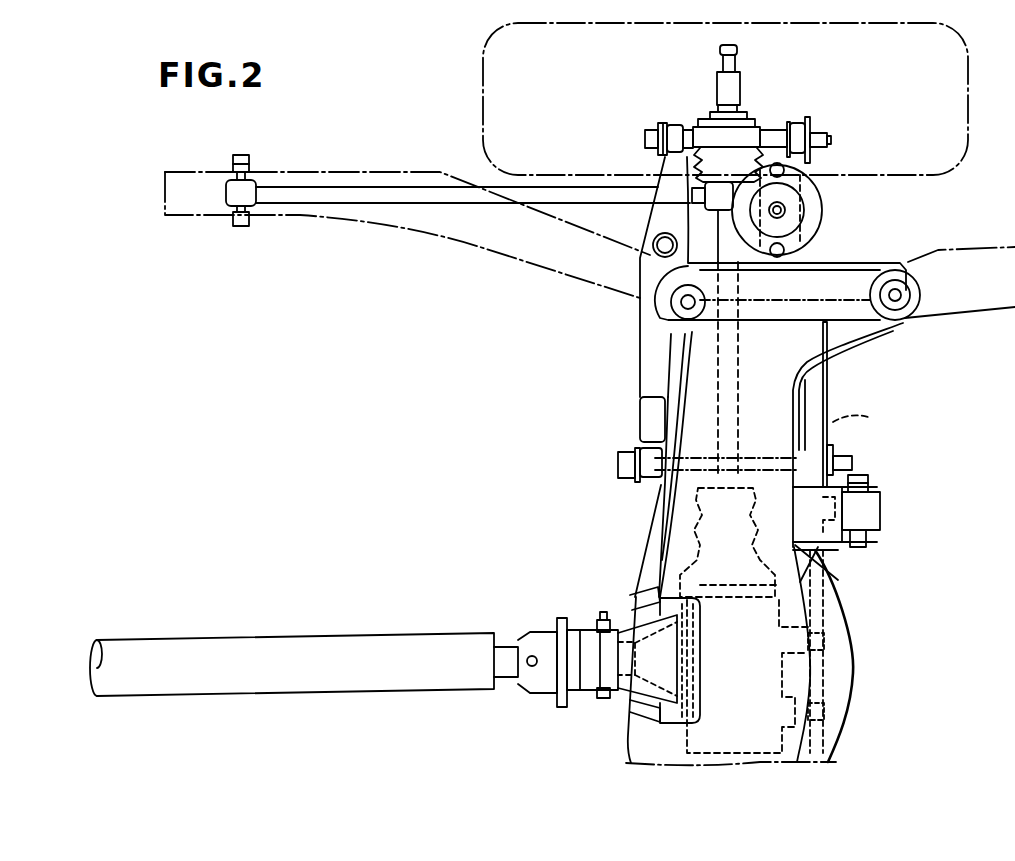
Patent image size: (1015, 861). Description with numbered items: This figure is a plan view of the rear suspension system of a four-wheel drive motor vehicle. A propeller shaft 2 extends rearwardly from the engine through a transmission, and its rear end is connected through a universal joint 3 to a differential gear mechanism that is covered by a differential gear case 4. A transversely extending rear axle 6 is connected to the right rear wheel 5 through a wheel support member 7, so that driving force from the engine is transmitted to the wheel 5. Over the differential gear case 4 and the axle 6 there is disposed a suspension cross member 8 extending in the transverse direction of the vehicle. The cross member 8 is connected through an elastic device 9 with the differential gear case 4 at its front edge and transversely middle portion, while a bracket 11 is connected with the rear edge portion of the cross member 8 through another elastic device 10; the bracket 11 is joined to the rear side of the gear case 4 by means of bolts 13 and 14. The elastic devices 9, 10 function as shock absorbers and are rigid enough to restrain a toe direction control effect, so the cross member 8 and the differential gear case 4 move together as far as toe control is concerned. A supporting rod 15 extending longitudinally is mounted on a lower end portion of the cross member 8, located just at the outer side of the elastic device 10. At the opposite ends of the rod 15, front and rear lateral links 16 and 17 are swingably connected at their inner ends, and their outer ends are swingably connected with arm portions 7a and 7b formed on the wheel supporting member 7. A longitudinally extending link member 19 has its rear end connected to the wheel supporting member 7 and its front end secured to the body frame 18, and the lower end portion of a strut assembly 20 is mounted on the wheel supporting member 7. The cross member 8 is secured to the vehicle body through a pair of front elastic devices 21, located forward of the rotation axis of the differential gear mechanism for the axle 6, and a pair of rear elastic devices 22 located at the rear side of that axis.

The propeller shaft 2 is at (408, 691).
The universal joint 3 is at (546, 695).
The differential gear case 4 is at (690, 745).
The right rear wheel 5 is at (482, 88).
The rear axle 6 is at (868, 417).
The wheel support member 7 is at (748, 128).
The arm portion 7a is at (690, 128).
The arm portion 7b is at (778, 128).
The suspension cross member 8 is at (835, 330).
The elastic device 9 is at (606, 692).
The elastic device 10 is at (882, 510).
The bracket 11 is at (838, 562).
The bolt 13 is at (826, 640).
The bolt 14 is at (830, 718).
The supporting rod 15 is at (657, 487).
The front lateral link 16 is at (663, 277).
The rear lateral link 17 is at (820, 262).
The body frame 18 is at (318, 170).
The link member 19 is at (436, 195).
The strut assembly 20 is at (822, 210).
The front elastic device 21 is at (675, 306).
The rear elastic device 22 is at (908, 264).